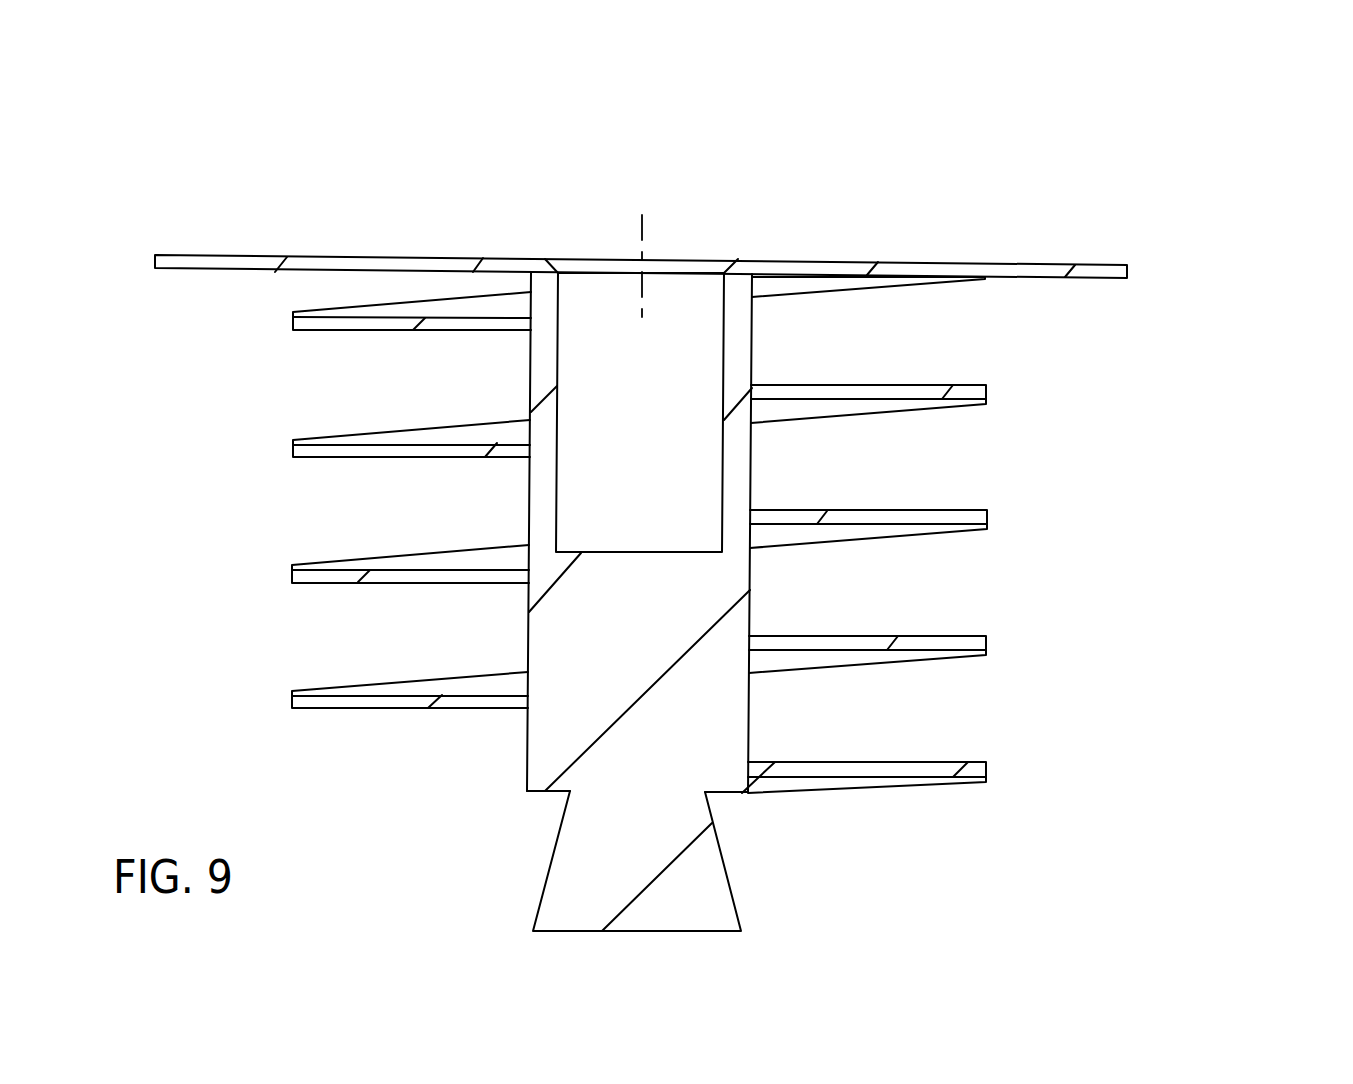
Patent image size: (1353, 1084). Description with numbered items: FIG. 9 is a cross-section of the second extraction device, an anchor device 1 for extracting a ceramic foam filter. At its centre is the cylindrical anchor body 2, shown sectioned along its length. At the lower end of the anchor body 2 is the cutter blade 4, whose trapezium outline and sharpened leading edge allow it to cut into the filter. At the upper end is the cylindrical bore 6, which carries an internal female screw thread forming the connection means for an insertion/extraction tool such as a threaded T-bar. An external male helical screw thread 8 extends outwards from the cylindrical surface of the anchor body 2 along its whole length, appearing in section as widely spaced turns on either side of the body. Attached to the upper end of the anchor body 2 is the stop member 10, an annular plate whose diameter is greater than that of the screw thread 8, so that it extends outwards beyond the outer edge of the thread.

The anchor device 1 is at (1114, 570).
The anchor body 2 is at (733, 625).
The cutter blade 4 is at (720, 907).
The cylindrical bore 6 is at (680, 327).
The external male helical screw thread 8 is at (345, 573).
The stop member 10 is at (1018, 267).